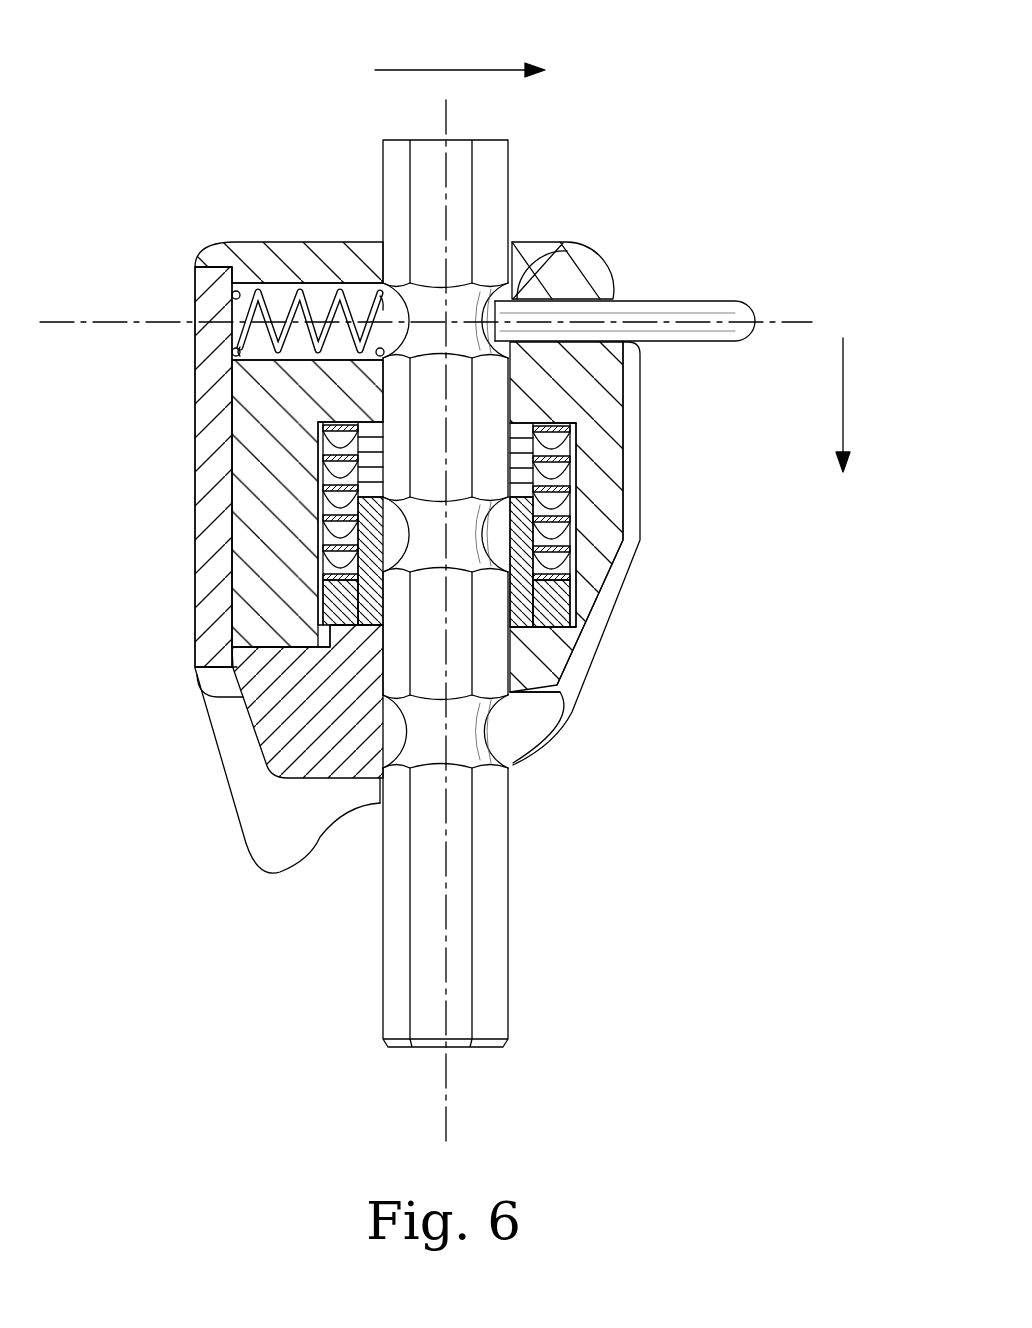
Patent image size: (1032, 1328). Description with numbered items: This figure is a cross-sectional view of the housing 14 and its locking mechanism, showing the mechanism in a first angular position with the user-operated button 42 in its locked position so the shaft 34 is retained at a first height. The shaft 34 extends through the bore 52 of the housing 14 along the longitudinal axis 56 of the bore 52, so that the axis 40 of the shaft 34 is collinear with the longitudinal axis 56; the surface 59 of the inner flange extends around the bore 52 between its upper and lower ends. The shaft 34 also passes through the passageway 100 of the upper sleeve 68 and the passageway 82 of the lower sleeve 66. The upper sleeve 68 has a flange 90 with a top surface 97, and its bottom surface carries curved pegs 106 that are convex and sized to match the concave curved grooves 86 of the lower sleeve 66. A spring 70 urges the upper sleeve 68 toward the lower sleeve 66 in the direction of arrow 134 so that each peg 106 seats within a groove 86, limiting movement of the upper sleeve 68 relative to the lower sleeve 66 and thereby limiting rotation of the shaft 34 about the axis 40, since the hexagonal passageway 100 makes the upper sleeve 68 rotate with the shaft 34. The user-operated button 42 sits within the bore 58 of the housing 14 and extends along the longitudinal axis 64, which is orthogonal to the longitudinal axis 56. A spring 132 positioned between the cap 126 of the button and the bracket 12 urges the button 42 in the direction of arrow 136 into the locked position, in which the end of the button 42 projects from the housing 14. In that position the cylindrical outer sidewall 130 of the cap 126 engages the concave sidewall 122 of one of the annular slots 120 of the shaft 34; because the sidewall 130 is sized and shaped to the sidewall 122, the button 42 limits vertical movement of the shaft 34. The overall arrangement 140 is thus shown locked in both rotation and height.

The bracket 12 is at (193, 290).
The housing 14 is at (585, 282).
The shaft 34 is at (508, 163).
The axis 40 is at (460, 958).
The user-operated button 42 is at (678, 305).
The bore 52 is at (575, 250).
The longitudinal axis 56 is at (448, 1093).
The bore 58 is at (248, 343).
The surface 59 is at (320, 436).
The longitudinal axis 64 is at (791, 320).
The lower sleeve 66 is at (533, 683).
The upper sleeve 68 is at (562, 612).
The spring 70 is at (572, 448).
The passageway 82 is at (397, 733).
The curved grooves 86 is at (340, 628).
The flange 90 is at (594, 628).
The top surface 97 is at (570, 573).
The passageway 100 is at (497, 533).
The curved pegs 106 is at (330, 605).
The annular slots 120 is at (432, 293).
The concave sidewall 122 is at (491, 342).
The cap 126 is at (385, 300).
The cylindrical outer sidewall 130 is at (395, 305).
The spring 132 is at (261, 285).
The arrow 134 is at (852, 400).
The arrow 136 is at (455, 70).
The assembly 140 is at (683, 148).